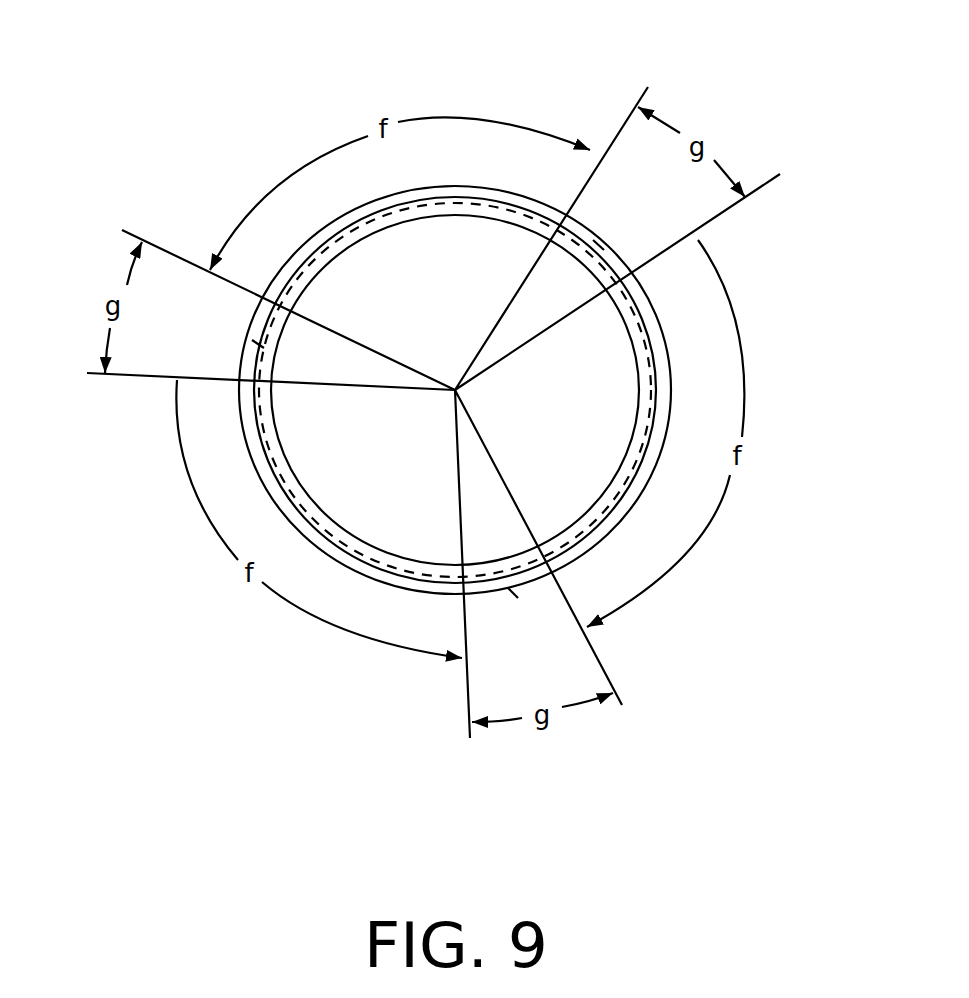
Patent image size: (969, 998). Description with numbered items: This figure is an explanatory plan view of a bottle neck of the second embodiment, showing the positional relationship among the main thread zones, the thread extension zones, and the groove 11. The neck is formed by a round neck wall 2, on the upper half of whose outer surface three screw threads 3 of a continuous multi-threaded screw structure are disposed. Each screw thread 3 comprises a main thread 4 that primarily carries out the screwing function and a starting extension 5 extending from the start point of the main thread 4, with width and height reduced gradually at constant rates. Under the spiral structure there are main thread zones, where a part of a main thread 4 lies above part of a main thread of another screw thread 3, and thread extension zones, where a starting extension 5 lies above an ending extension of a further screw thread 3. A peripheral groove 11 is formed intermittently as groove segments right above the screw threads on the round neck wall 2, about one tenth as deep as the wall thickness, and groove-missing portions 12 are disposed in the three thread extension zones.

The round neck wall 2 is at (396, 558).
The screw thread 3 is at (510, 180).
The main thread 4 is at (317, 242).
The starting extension 5 is at (264, 309).
The groove 11 is at (385, 212).
The groove-missing portion 12 is at (598, 245).